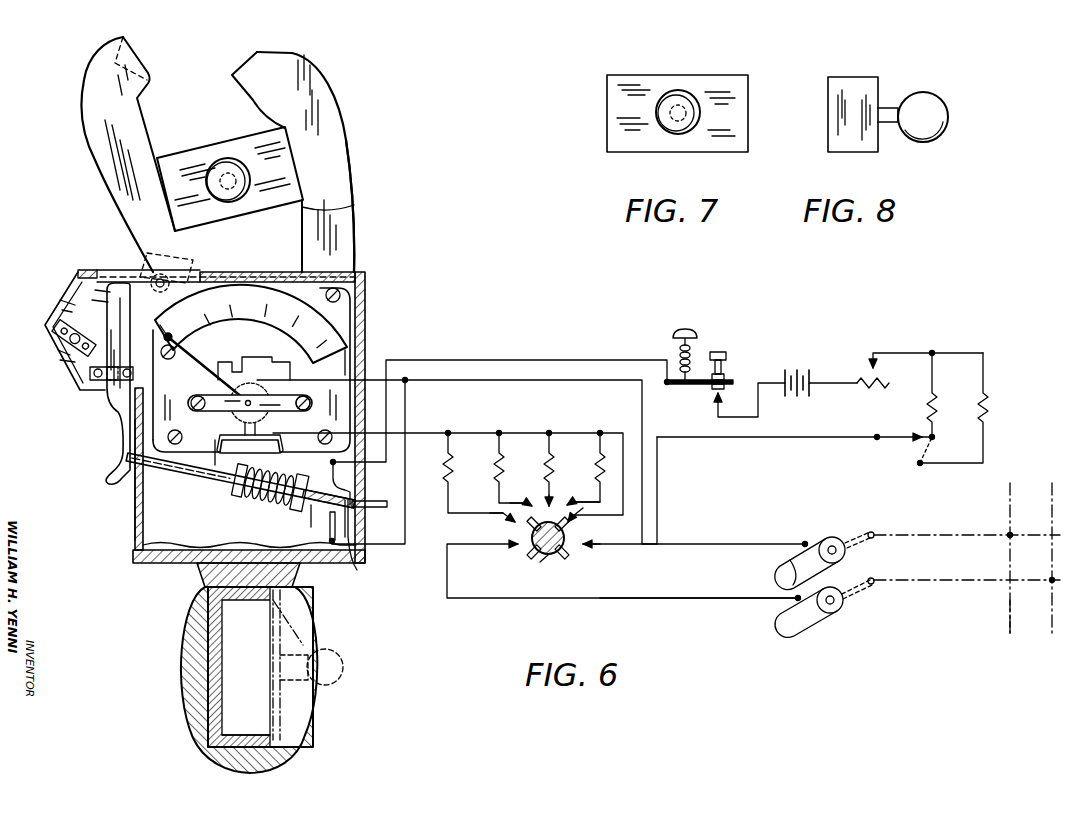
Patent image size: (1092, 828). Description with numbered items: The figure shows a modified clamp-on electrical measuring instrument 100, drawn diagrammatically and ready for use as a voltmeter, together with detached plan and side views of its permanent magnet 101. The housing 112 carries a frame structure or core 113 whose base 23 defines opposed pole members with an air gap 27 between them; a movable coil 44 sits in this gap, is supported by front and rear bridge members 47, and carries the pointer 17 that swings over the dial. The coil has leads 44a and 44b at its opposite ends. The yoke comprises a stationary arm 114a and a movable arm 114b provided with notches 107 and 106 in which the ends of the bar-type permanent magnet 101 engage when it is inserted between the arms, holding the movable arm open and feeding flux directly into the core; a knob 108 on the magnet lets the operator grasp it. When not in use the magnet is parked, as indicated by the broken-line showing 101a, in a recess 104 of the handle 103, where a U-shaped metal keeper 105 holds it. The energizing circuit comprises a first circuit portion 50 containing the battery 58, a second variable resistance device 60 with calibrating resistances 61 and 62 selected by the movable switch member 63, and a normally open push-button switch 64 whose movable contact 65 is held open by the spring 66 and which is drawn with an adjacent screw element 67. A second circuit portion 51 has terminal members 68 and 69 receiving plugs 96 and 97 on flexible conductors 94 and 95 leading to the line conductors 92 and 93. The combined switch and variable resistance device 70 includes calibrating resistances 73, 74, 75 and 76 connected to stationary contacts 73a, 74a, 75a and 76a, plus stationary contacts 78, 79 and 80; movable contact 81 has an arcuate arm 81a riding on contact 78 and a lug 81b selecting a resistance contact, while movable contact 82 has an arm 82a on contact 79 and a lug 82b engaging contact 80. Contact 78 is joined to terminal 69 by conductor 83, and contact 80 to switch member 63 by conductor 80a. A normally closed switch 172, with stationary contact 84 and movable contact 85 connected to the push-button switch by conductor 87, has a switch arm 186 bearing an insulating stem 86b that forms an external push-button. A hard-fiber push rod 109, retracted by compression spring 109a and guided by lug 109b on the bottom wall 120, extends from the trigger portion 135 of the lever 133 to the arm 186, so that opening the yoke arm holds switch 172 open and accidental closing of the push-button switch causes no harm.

In FIG. 6, the electrical measuring instrument 100 is at (373, 320).
In FIG. 6, the permanent magnet 101 is at (233, 210).
In FIG. 7, the permanent magnet 101 is at (706, 76).
In FIG. 8, the permanent magnet 101 is at (852, 77).
In FIG. 6, the parked position of magnet 101a is at (308, 633).
In FIG. 6, the handle 103 is at (182, 638).
In FIG. 6, the recess 104 is at (297, 618).
In FIG. 6, the metal keeper 105 is at (240, 735).
In FIG. 6, the notch 106 is at (143, 254).
In FIG. 6, the notch 107 is at (340, 208).
In FIG. 6, the knob 108 is at (222, 160).
In FIG. 7, the knob 108 is at (662, 96).
In FIG. 8, the knob 108 is at (925, 100).
In FIG. 6, the push rod 109 is at (215, 483).
In FIG. 6, the compression spring 109a is at (267, 503).
In FIG. 6, the lug 109b is at (218, 476).
In FIG. 6, the housing 112 is at (135, 504).
In FIG. 6, the frame structure or core 113 is at (357, 246).
In FIG. 6, the stationary yoke arm 114a is at (338, 168).
In FIG. 6, the movable yoke arm 114b is at (97, 148).
In FIG. 6, the bottom wall 120 is at (153, 524).
In FIG. 6, the lever 133 is at (76, 284).
In FIG. 6, the trigger portion 135 is at (118, 443).
In FIG. 6, the normally closed switch 172 is at (300, 524).
In FIG. 6, the switch arm 186 is at (347, 483).
In FIG. 6, the pointer 17 is at (200, 342).
In FIG. 6, the base 23 is at (330, 400).
In FIG. 6, the air gap 27 is at (253, 373).
In FIG. 6, the movable coil 44 is at (338, 402).
In FIG. 6, the coil lead 44a is at (627, 433).
In FIG. 6, the coil lead 44b is at (733, 546).
In FIG. 6, the bridge member 47 is at (208, 394).
In FIG. 6, the first circuit portion 50 is at (821, 394).
In FIG. 6, the second circuit portion 51 is at (770, 572).
In FIG. 6, the battery 58 is at (790, 370).
In FIG. 6, the second variable resistance device 60 is at (949, 395).
In FIG. 6, the calibrating resistance 61 is at (927, 398).
In FIG. 6, the calibrating resistance 62 is at (987, 400).
In FIG. 6, the movable switch member 63 is at (903, 440).
In FIG. 6, the push-button switch 64 is at (739, 369).
In FIG. 6, the movable contact 65 is at (710, 388).
In FIG. 6, the spring 66 is at (670, 355).
In FIG. 6, the adjusting screw 67 is at (723, 351).
In FIG. 6, the terminal member 68 is at (818, 545).
In FIG. 6, the terminal member 69 is at (814, 620).
In FIG. 6, the combined switch and variable resistance device 70 is at (535, 553).
In FIG. 6, the calibrating resistance 73 is at (445, 470).
In FIG. 6, the stationary contact 73a is at (503, 512).
In FIG. 6, the calibrating resistance 74 is at (496, 468).
In FIG. 6, the stationary contact 74a is at (524, 492).
In FIG. 6, the calibrating resistance 75 is at (546, 468).
In FIG. 6, the stationary contact 75a is at (549, 487).
In FIG. 6, the calibrating resistance 76 is at (597, 466).
In FIG. 6, the stationary contact 76a is at (583, 492).
In FIG. 6, the stationary contact 78 is at (500, 546).
In FIG. 6, the stationary contact 79 is at (585, 508).
In FIG. 6, the stationary contact 80 is at (600, 545).
In FIG. 6, the conductor 80a is at (773, 437).
In FIG. 6, the movable contact member 81 is at (525, 555).
In FIG. 6, the arcuate arm portion 81a is at (544, 560).
In FIG. 6, the lug portion 81b is at (522, 527).
In FIG. 6, the movable contact member 82 is at (570, 515).
In FIG. 6, the arcuate arm portion 82a is at (590, 542).
In FIG. 6, the lug portion 82b is at (568, 560).
In FIG. 6, the conductor 83 is at (698, 598).
In FIG. 6, the stationary contact 84 is at (334, 548).
In FIG. 6, the movable contact 85 is at (357, 570).
In FIG. 6, the stem 86b is at (362, 512).
In FIG. 6, the conductor 87 is at (527, 362).
In FIG. 6, the line conductor 92 is at (1053, 534).
In FIG. 6, the line conductor 93 is at (1008, 616).
In FIG. 6, the flexible conductor 94 is at (951, 533).
In FIG. 6, the flexible conductor 95 is at (952, 566).
In FIG. 6, the plug 96 is at (170, 345).
In FIG. 6, the plug 97 is at (855, 600).